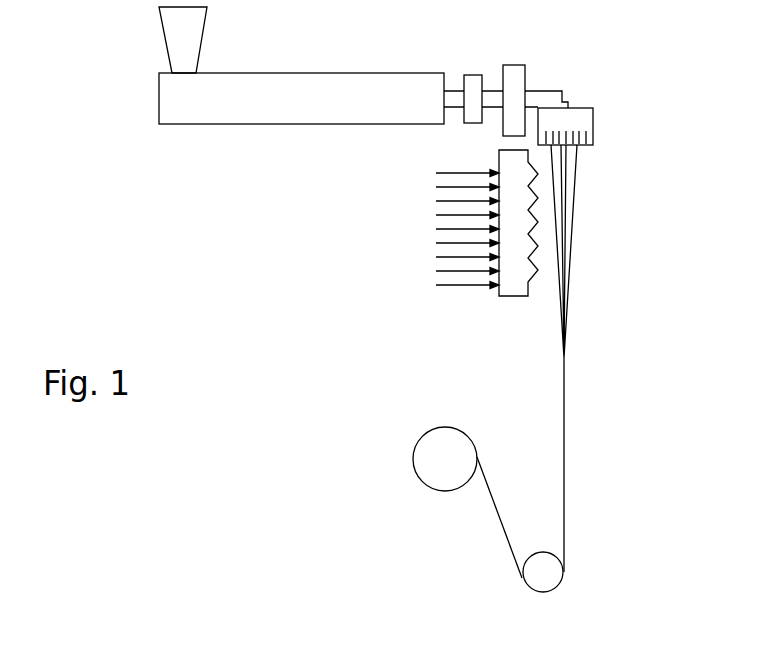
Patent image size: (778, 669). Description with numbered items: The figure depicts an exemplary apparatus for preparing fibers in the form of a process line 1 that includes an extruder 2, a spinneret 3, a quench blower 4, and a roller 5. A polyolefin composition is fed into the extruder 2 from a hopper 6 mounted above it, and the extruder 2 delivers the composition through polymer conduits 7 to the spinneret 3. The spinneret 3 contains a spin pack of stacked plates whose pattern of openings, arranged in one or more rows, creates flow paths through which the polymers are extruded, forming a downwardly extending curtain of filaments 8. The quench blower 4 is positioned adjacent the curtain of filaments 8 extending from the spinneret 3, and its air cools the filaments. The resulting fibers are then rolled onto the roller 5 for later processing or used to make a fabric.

The process line 1 is at (634, 58).
The extruder 2 is at (208, 125).
The spinneret 3 is at (595, 118).
The quench blower 4 is at (510, 298).
The roller 5 is at (413, 457).
The hopper 6 is at (167, 40).
The polymer conduits 7 is at (488, 90).
The curtain of filaments 8 is at (572, 270).